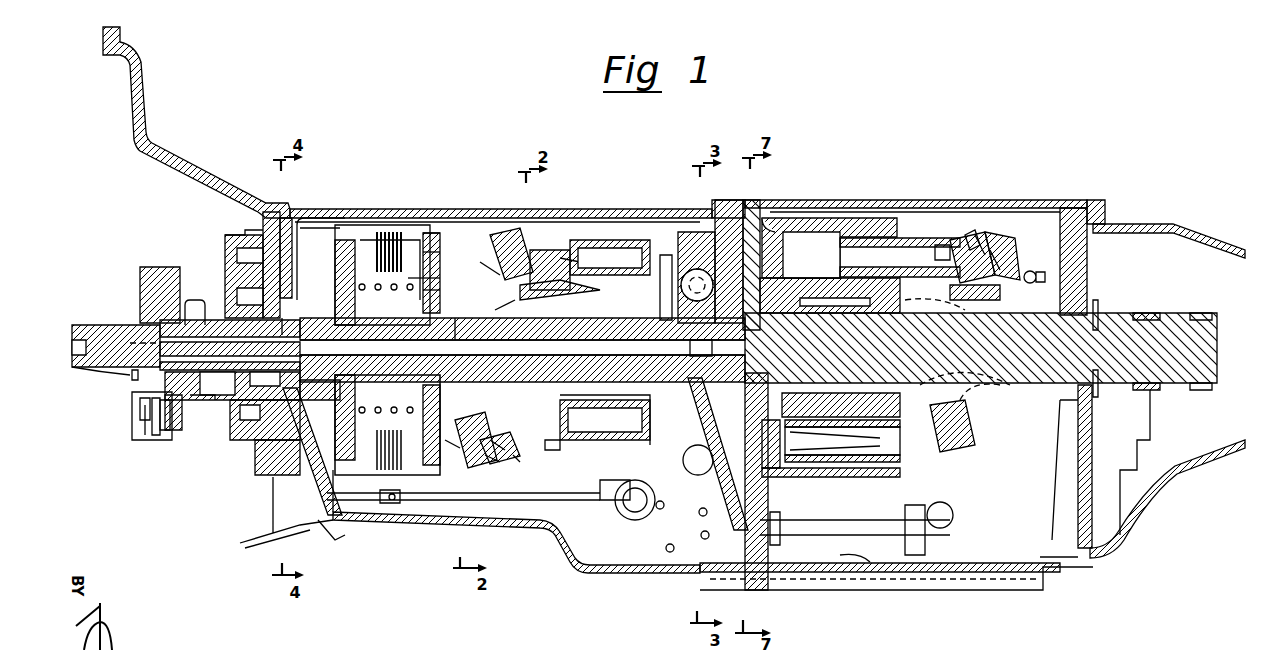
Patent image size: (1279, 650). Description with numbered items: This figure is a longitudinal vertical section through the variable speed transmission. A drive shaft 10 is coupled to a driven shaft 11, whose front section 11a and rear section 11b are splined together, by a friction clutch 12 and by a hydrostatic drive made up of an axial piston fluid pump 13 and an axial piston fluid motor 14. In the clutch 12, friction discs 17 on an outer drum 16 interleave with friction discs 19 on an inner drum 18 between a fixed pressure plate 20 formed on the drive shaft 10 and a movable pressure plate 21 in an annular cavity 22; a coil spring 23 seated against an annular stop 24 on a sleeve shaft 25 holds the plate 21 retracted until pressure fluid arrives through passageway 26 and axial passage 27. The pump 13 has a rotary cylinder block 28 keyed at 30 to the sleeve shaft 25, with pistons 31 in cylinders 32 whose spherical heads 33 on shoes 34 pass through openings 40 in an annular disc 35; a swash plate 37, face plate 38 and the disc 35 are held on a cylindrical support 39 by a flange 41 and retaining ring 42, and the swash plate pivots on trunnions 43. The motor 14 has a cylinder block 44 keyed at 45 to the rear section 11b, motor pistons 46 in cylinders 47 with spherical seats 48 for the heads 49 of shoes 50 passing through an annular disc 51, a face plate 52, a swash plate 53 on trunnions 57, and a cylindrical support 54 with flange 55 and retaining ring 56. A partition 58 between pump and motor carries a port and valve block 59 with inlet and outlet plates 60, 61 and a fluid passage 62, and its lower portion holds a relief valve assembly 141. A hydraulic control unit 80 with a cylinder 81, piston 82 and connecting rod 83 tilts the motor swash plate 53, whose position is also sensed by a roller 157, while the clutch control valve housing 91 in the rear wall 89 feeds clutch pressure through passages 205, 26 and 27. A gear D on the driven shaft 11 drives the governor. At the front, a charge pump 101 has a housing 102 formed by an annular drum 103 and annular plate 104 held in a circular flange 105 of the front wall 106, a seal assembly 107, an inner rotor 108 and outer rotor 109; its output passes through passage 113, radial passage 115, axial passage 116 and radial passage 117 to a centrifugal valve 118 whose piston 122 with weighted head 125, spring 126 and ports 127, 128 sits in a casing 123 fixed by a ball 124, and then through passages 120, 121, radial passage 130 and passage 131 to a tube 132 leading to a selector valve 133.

The drive shaft 10 is at (92, 318).
The driven shaft 11 is at (1124, 311).
The front section 11a is at (455, 318).
The rear section 11b is at (1003, 386).
The friction clutch 12 is at (393, 232).
The fluid pump 13 is at (590, 212).
The fluid motor 14 is at (838, 204).
The outer cylindrical drum 16 is at (425, 232).
The friction discs 17 is at (383, 232).
The inner drum 18 is at (348, 262).
The friction discs 19 is at (388, 458).
The fixed annular backing plate 20 is at (340, 238).
The axially movable pressure plate 21 is at (436, 236).
The annular cavity 22 is at (437, 252).
The coil spring 23 is at (425, 278).
The annular stop 24 is at (382, 292).
The sleeve shaft 25 is at (437, 290).
The passageway 26 is at (470, 345).
The axial passage 27 is at (703, 346).
The rotary cylinder block 28 is at (555, 450).
The splined or keyed connection 30 is at (590, 410).
The pistons 31 is at (605, 245).
The cylinders 32 is at (630, 483).
The spherical heads 33 is at (560, 258).
The shoes 34 is at (545, 255).
The annular disc 35 is at (495, 458).
The swash plate 37 is at (497, 245).
The annular face plate 38 is at (455, 435).
The cylindrical support 39 is at (470, 430).
The openings 40 is at (498, 445).
The flange 41 is at (535, 295).
The retaining ring 42 is at (488, 268).
The trunnions 43 is at (500, 312).
The motor cylinder block 44 is at (805, 218).
The keyed connection 45 is at (818, 420).
The motor pistons 46 is at (800, 477).
The cylinders 47 is at (815, 240).
The partially spherical seats 48 is at (940, 250).
The spherical heads 49 is at (968, 240).
The shoes 50 is at (975, 250).
The annular disc 51 is at (980, 240).
The face plate 52 is at (990, 255).
The swash plate 53 is at (1005, 255).
The cylindrical support 54 is at (980, 292).
The flange 55 is at (935, 295).
The retaining ring 56 is at (972, 440).
The trunnions 57 is at (1000, 398).
The partition 58 is at (730, 199).
The port and valve block 59 is at (700, 245).
The fluid inlet plate 60 is at (668, 255).
The fluid outlet plate 61 is at (752, 215).
The fluid passage 62 is at (700, 420).
The hydraulic control unit 80 is at (855, 565).
The cylinder 81 is at (812, 508).
The piston 82 is at (915, 530).
The connecting rod 83 is at (953, 512).
The rear wall 89 is at (1092, 440).
The housing 91 is at (1058, 436).
The charge pump 101 is at (233, 220).
The housing 102 is at (220, 243).
The annular drum 103 is at (235, 235).
The annular plate 104 is at (282, 242).
The circular flange 105 is at (266, 480).
The front wall 106 is at (290, 262).
The seal assembly 107 is at (195, 302).
The inner rotor 108 is at (238, 410).
The outer rotor 109 is at (260, 430).
The passage 113 is at (303, 408).
The radial passage 115 is at (265, 350).
The axially extending passage 116 is at (282, 330).
The radial passage 117 is at (133, 343).
The centrifugally-operated valve 118 is at (130, 436).
The passage 120 is at (85, 368).
The passage 121 is at (198, 388).
The piston 122 is at (150, 418).
The casing 123 is at (132, 395).
The ball 124 is at (140, 292).
The weighted head 125 is at (132, 375).
The spring 126 is at (140, 405).
The port 127 is at (178, 418).
The port 128 is at (150, 415).
The radial passage 130 is at (303, 348).
The passage 131 is at (312, 440).
The tube 132 is at (520, 505).
The selector valve 133 is at (610, 483).
The relief valve assembly 141 is at (683, 463).
The roller 157 is at (1036, 275).
The passage 205 is at (720, 413).
The gear D is at (1198, 312).